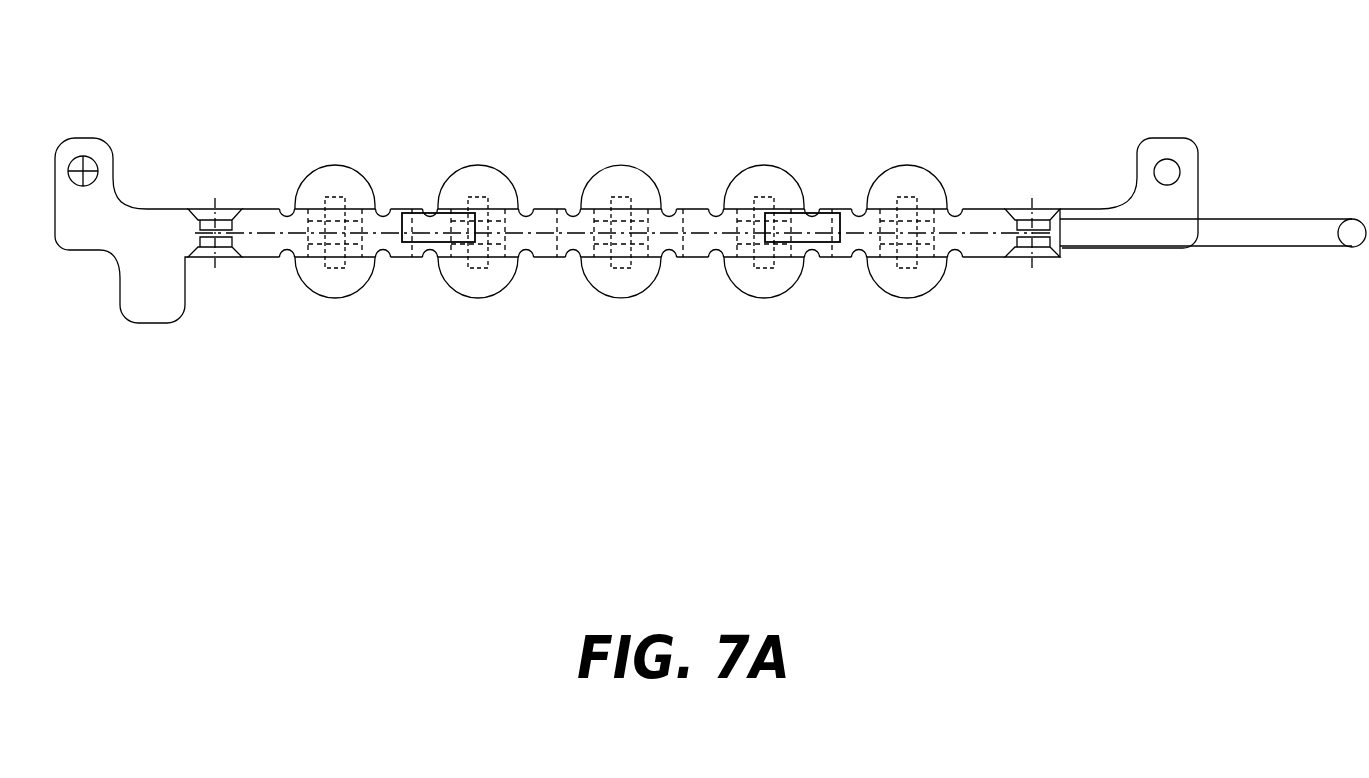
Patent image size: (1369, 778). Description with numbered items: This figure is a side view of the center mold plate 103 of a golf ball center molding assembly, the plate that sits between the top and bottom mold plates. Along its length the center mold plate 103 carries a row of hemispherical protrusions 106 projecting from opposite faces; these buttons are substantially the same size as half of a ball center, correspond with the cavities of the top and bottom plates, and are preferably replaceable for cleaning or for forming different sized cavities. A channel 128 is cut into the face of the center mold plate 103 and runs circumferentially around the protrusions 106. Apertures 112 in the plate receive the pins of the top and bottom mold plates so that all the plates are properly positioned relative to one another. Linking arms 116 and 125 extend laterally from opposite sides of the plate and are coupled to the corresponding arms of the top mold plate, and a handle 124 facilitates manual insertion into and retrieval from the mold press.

The center mold plate 103 is at (619, 114).
The protrusions 106 is at (790, 178).
The apertures 112 is at (405, 258).
The linking arms 116 is at (1135, 182).
The handles 124 is at (1245, 248).
The linking arms 125 is at (118, 187).
The channel 128 is at (678, 203).